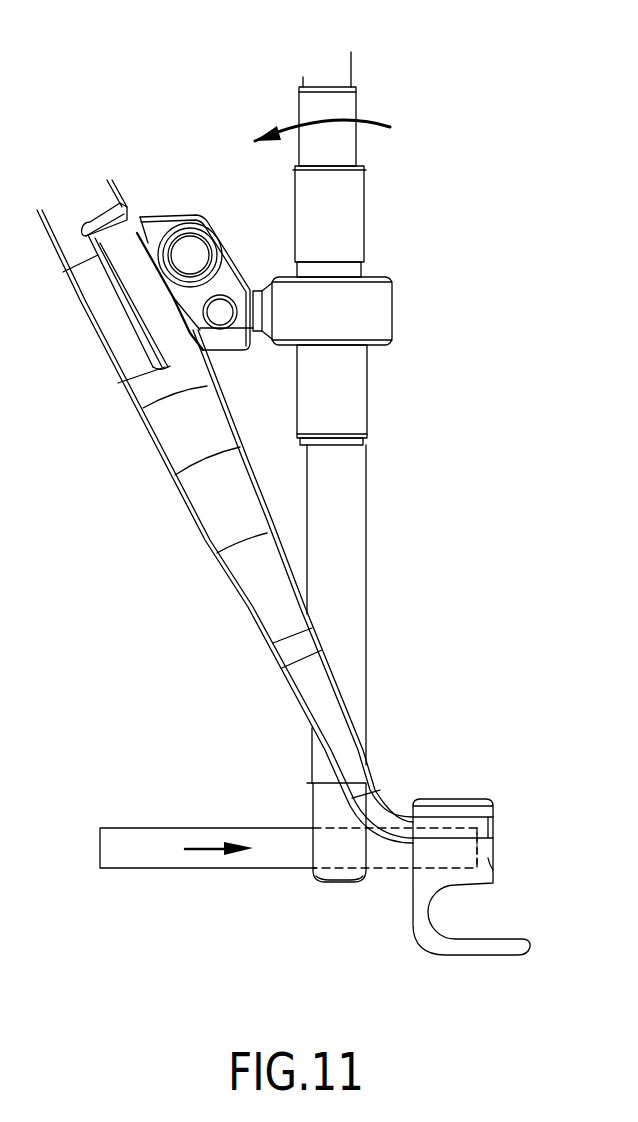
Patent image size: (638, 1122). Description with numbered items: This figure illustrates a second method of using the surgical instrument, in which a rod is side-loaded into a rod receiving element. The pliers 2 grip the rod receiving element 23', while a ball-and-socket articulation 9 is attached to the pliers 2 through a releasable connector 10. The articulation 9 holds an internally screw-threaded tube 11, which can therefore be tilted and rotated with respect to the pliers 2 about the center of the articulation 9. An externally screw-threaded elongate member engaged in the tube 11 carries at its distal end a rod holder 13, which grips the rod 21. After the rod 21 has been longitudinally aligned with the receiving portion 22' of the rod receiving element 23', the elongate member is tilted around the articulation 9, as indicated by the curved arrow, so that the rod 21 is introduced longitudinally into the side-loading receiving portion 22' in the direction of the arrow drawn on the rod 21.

The pliers 2 is at (137, 457).
The ball-and-socket articulation 9 is at (378, 318).
The releasable connector 10 is at (230, 285).
The internally screw-threaded tube 11 is at (348, 408).
The rod holder 13 is at (340, 884).
The rod 21 is at (175, 838).
The hook 22' is at (526, 854).
The hook block 23' is at (488, 864).